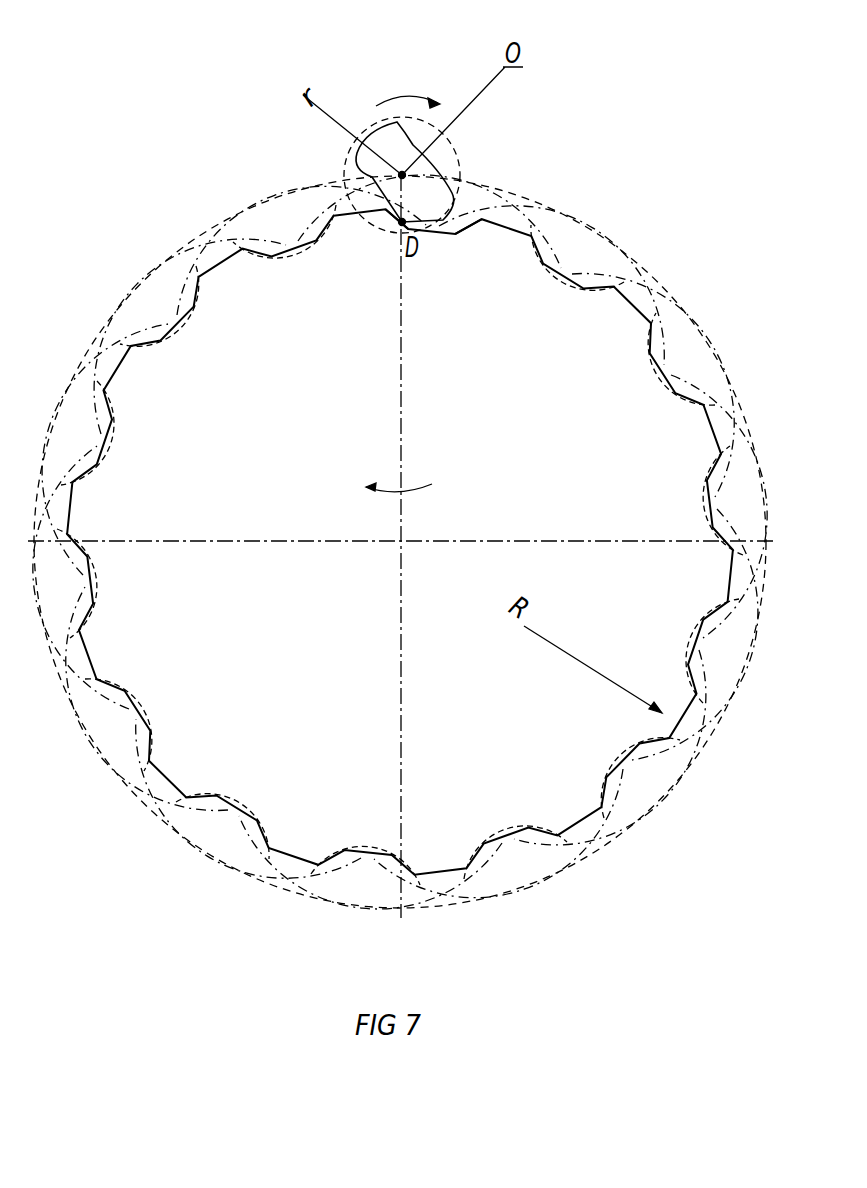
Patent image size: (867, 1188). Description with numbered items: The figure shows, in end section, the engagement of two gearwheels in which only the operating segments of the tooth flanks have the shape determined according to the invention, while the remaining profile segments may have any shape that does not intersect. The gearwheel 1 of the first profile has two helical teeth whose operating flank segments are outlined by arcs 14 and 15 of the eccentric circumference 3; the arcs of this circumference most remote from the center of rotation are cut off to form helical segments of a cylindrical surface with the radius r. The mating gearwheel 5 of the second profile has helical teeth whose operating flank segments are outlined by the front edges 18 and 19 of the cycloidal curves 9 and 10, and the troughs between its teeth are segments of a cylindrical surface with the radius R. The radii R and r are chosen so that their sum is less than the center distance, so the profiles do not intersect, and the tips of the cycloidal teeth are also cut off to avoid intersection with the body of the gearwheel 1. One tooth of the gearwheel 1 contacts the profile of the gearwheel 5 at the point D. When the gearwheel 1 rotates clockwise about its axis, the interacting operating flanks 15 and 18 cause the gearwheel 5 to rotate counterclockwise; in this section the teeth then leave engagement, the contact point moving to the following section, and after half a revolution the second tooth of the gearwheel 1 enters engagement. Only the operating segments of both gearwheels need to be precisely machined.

The gearwheel of the first profile 1 is at (510, 109).
The eccentric circumference 3 is at (375, 121).
The gearwheel of the second profile 5 is at (700, 266).
The cycloidal curve 9 is at (578, 220).
The cycloidal curve 10 is at (678, 304).
The arc of the eccentric circumference 14 is at (367, 173).
The arc of the eccentric circumference 15 is at (400, 221).
The front edge of cycloidal curve 18 is at (394, 211).
The front edge of cycloidal curve 19 is at (473, 222).